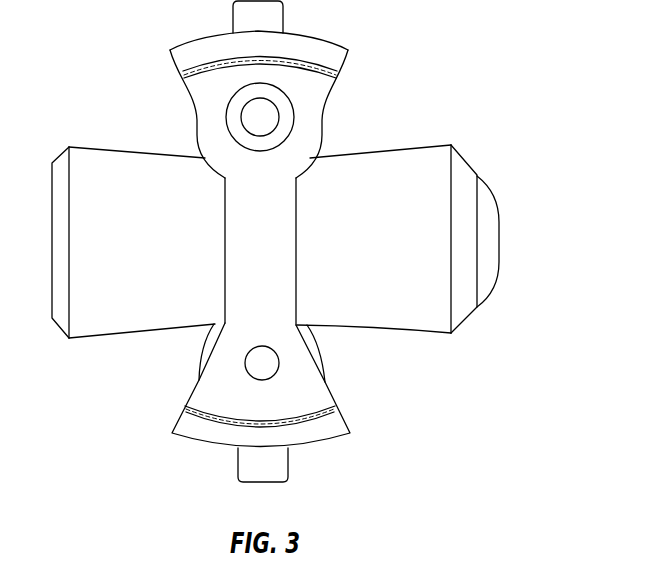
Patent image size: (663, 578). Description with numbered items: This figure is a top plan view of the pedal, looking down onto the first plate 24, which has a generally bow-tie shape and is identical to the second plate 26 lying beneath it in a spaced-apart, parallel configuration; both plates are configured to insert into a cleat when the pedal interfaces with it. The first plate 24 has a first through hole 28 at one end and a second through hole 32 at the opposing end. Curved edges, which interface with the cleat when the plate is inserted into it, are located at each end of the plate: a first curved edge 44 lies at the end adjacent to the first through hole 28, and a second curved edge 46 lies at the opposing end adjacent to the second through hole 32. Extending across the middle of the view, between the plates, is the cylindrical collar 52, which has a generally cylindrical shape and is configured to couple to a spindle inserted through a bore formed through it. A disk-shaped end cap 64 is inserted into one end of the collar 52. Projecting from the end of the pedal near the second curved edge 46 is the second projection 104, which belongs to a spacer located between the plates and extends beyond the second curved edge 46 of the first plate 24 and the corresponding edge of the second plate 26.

The first plate 24 is at (317, 395).
The second plate 26 is at (196, 352).
The first through hole 28 is at (268, 116).
The second through hole 32 is at (268, 364).
The first curved edge 44 is at (345, 46).
The second curved edge 46 is at (338, 438).
The cylindrical collar 52 is at (503, 113).
The end cap 64 is at (497, 202).
The second projection 104 is at (282, 483).